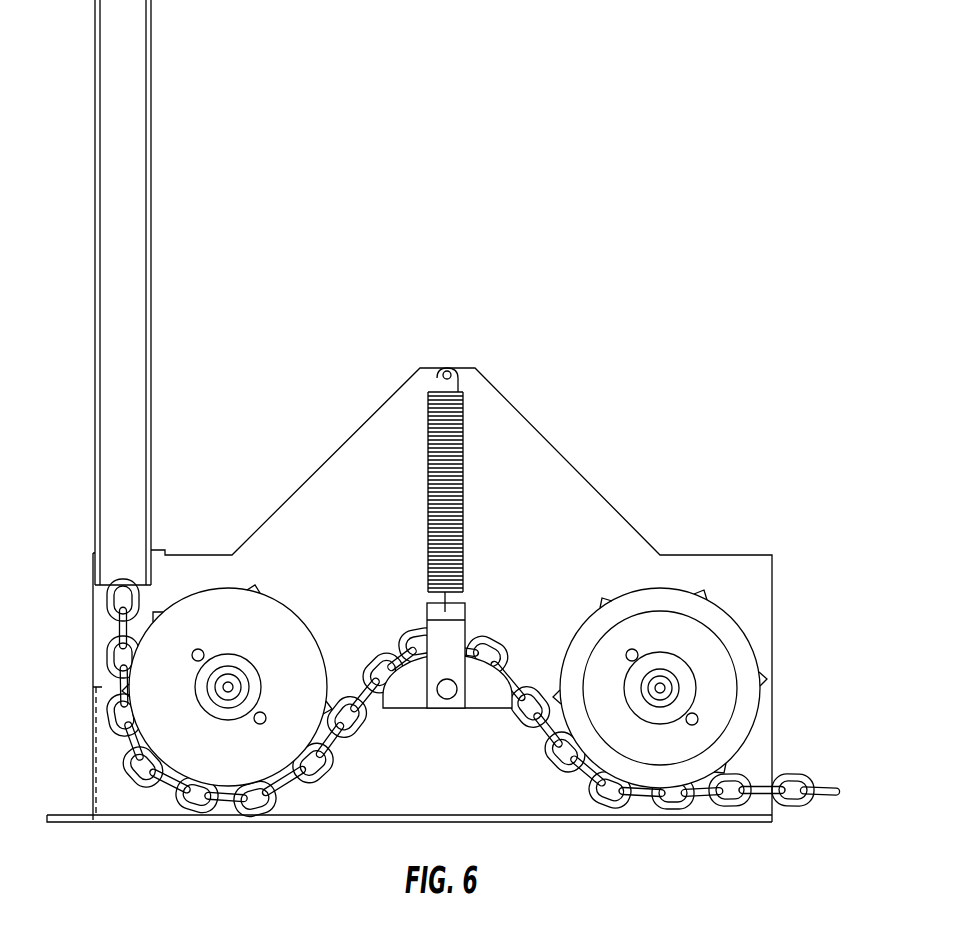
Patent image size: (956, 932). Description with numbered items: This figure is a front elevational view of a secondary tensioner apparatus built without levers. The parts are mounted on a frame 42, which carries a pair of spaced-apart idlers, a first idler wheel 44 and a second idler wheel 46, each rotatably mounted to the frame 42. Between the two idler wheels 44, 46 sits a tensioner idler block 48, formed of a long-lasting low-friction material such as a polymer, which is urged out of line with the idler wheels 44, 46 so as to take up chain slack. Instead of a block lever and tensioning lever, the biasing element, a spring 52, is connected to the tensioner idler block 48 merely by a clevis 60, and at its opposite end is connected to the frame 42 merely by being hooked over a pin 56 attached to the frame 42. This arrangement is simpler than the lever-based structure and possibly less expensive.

The frame 42 is at (362, 444).
The first idler wheel 44 is at (743, 648).
The second idler wheel 46 is at (158, 692).
The tensioner idler block 48 is at (478, 693).
The spring 52 is at (462, 467).
The pin 56 is at (449, 368).
The clevis 60 is at (452, 633).